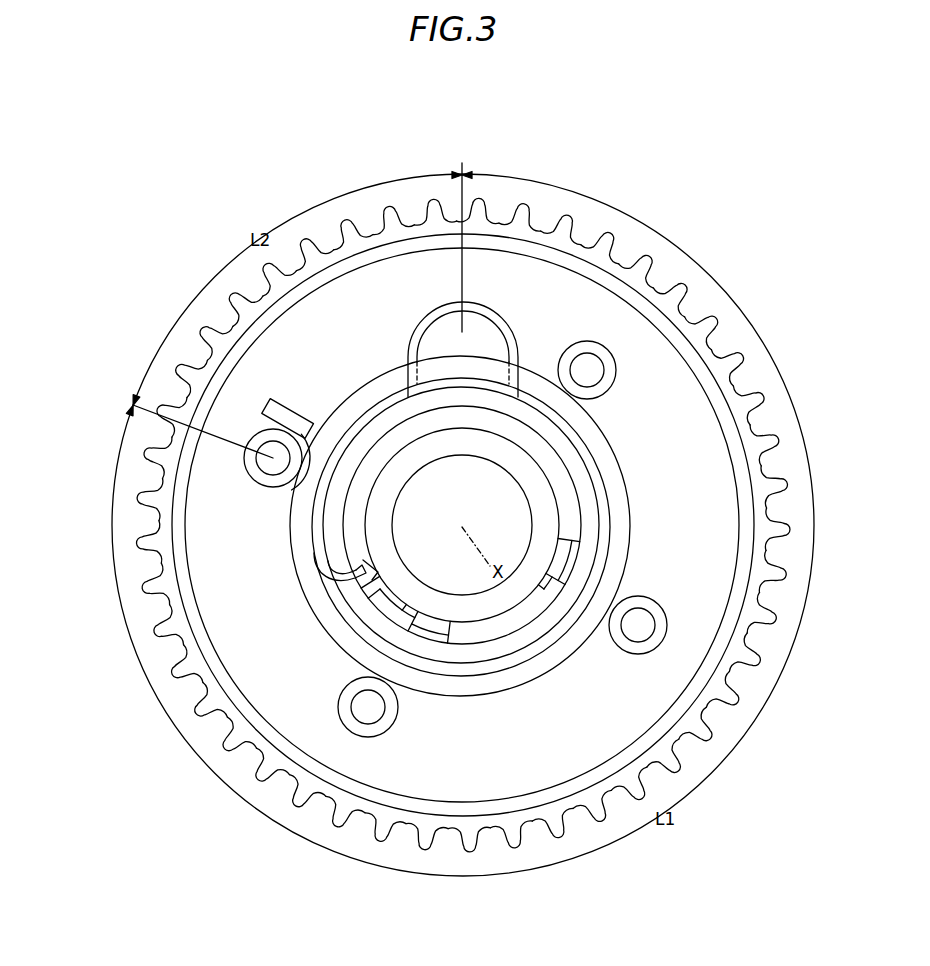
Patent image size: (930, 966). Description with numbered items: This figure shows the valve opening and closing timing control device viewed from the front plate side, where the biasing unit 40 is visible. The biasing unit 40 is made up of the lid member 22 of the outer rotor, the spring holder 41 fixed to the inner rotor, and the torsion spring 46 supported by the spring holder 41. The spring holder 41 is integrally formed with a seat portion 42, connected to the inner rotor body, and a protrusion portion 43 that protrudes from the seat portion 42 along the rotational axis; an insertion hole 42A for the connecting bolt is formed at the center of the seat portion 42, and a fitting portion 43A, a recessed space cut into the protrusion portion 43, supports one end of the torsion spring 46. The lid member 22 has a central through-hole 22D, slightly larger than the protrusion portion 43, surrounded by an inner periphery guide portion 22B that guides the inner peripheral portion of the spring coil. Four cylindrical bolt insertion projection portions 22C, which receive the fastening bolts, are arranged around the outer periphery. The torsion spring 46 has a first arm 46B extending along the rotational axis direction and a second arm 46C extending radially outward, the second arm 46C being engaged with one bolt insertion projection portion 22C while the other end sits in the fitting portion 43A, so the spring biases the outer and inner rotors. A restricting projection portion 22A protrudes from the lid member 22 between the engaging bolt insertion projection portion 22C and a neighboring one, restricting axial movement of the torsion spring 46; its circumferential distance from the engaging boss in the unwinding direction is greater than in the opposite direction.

The lid member 22 is at (281, 360).
The restricting projection portion 22A is at (480, 323).
The inner periphery guide portion 22B is at (477, 657).
The bolt insertion projection portions 22C is at (612, 372).
The through-hole 22D is at (574, 493).
The biasing unit 40 is at (446, 559).
The spring holder 41 is at (455, 645).
The seat portion 42 is at (520, 463).
The insertion hole 42A is at (512, 527).
The protrusion portion 43 is at (543, 607).
The fitting portion 43A is at (372, 580).
The torsion spring 46 is at (530, 687).
The first arm 46B is at (352, 588).
The second arm 46C is at (290, 418).